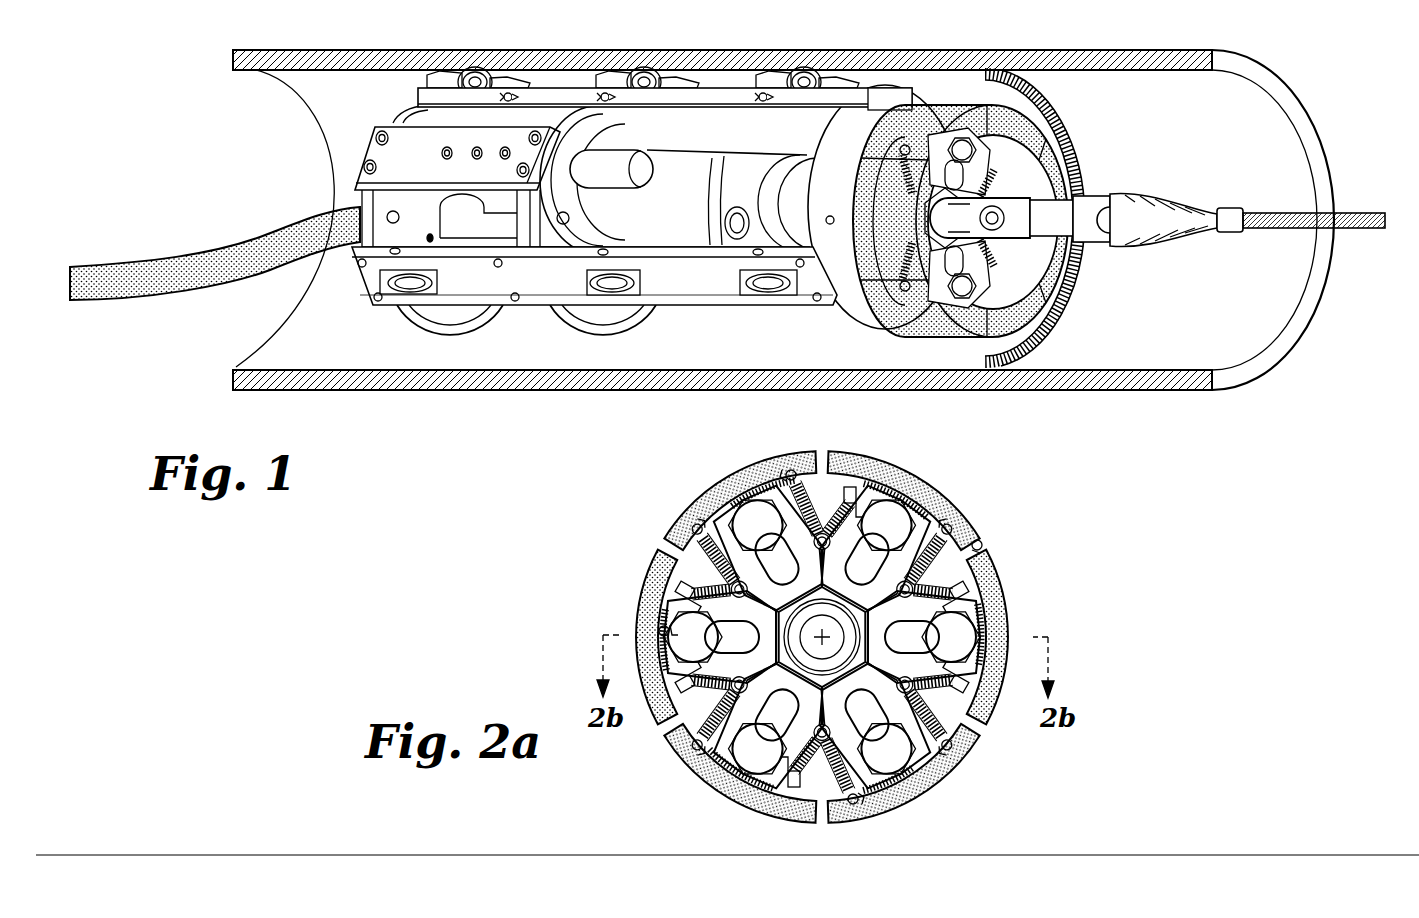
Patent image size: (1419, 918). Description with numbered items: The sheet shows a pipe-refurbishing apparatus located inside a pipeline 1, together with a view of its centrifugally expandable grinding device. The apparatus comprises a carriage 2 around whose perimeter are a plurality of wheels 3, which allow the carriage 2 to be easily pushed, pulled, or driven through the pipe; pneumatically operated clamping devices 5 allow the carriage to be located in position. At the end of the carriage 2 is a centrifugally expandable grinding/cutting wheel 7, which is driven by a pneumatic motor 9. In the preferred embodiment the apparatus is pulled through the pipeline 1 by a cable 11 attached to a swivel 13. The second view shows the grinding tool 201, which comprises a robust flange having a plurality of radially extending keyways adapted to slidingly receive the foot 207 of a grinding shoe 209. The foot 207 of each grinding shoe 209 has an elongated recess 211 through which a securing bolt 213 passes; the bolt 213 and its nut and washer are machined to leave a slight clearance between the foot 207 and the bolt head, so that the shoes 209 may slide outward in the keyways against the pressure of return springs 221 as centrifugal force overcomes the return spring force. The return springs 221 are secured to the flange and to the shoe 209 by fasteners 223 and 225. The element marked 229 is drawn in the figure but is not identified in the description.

In FIG. 1, the pipeline 1 is at (498, 388).
In FIG. 1, the carriage 2 is at (730, 76).
In FIG. 1, the wheels 3 is at (471, 68).
In FIG. 1, the pneumatically operated clamping devices 5 is at (493, 203).
In FIG. 1, the centrifugally expandable grinding/cutting wheel 7 is at (1040, 137).
In FIG. 1, the pneumatic motor 9 is at (640, 232).
In FIG. 1, the cable 11 is at (1262, 215).
In FIG. 1, the swivel 13 is at (1053, 235).
In FIG. 2A, the grinding tool 201 is at (718, 464).
In FIG. 2A, the foot 207 is at (860, 636).
In FIG. 2A, the grinding shoe 209 is at (943, 492).
In FIG. 2A, the elongated recess 211 is at (952, 734).
In FIG. 2A, the securing bolt 213 is at (944, 765).
In FIG. 2A, the return springs 221 is at (825, 562).
In FIG. 2A, the fastener 223 is at (641, 586).
In FIG. 2A, the fastener 225 is at (667, 571).
In FIG. 2A, the central hub 229 is at (933, 620).